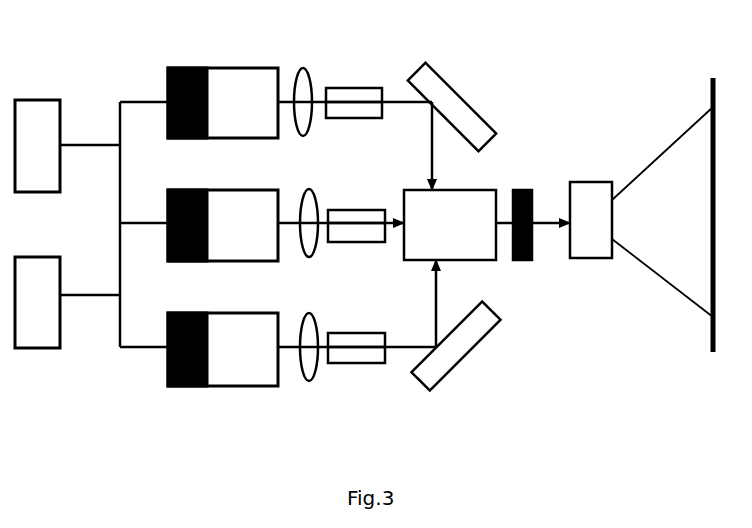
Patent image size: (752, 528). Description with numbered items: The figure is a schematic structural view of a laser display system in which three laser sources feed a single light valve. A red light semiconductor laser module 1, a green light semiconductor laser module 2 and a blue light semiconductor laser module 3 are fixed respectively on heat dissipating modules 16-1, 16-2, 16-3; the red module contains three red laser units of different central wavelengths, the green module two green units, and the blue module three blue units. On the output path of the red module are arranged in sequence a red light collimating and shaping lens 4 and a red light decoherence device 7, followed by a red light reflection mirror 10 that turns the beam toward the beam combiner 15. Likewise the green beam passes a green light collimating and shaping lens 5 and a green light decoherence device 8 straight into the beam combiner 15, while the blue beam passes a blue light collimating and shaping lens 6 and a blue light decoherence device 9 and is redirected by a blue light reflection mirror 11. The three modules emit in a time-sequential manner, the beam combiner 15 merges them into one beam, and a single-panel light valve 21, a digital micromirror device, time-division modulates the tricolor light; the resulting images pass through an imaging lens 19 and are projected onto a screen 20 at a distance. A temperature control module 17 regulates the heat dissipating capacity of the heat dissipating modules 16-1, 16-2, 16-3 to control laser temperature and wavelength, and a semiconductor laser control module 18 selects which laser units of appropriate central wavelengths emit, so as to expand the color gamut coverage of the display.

The red light semiconductor laser module 1 is at (250, 68).
The green light semiconductor laser module 2 is at (250, 148).
The blue light semiconductor laser module 3 is at (258, 313).
The red light collimating and shaping lens 4 is at (303, 68).
The green light collimating and shaping lens 5 is at (309, 190).
The blue light collimating and shaping lens 6 is at (309, 313).
The red light decoherence device 7 is at (352, 88).
The green light decoherence device 8 is at (349, 210).
The blue light decoherence device 9 is at (354, 333).
The red light reflection mirror 10 is at (453, 42).
The blue light reflection mirror 11 is at (452, 365).
The beam combiner 15 is at (495, 190).
The heat dissipating module 16-1 is at (174, 68).
The heat dissipating module 16-2 is at (188, 148).
The heat dissipating module 16-3 is at (188, 313).
The temperature control module 17 is at (36, 100).
The semiconductor laser control module 18 is at (36, 257).
The imaging lens 19 is at (598, 182).
The screen 20 is at (713, 72).
The single-panel light valve 21 is at (520, 190).